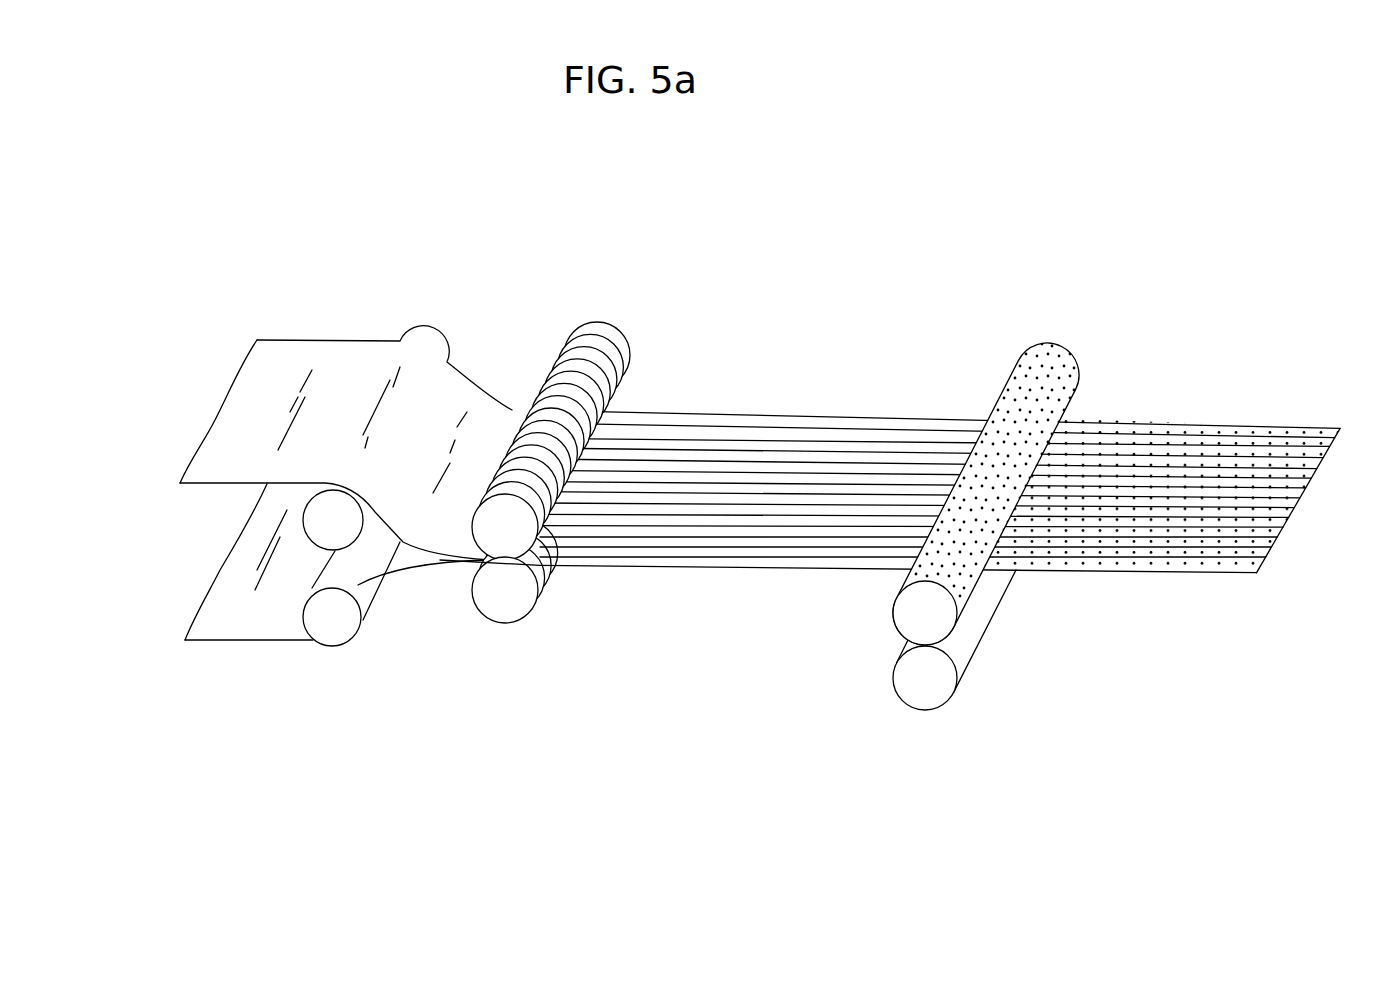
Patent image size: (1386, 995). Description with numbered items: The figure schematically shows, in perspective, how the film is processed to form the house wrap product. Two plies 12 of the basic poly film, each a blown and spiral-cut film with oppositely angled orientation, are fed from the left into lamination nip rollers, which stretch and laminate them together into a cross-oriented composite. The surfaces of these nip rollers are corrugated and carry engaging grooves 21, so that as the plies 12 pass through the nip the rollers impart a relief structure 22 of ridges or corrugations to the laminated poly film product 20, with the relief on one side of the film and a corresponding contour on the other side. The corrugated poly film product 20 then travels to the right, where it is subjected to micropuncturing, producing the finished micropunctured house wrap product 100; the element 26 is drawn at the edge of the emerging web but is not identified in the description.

The film ply 12 is at (318, 340).
The poly film product 20 is at (725, 412).
The engaging grooves 21 is at (495, 475).
The relief structure 22 is at (803, 430).
The micropunctured house wrap product 100 is at (1138, 422).
The coated web 26 is at (1235, 571).